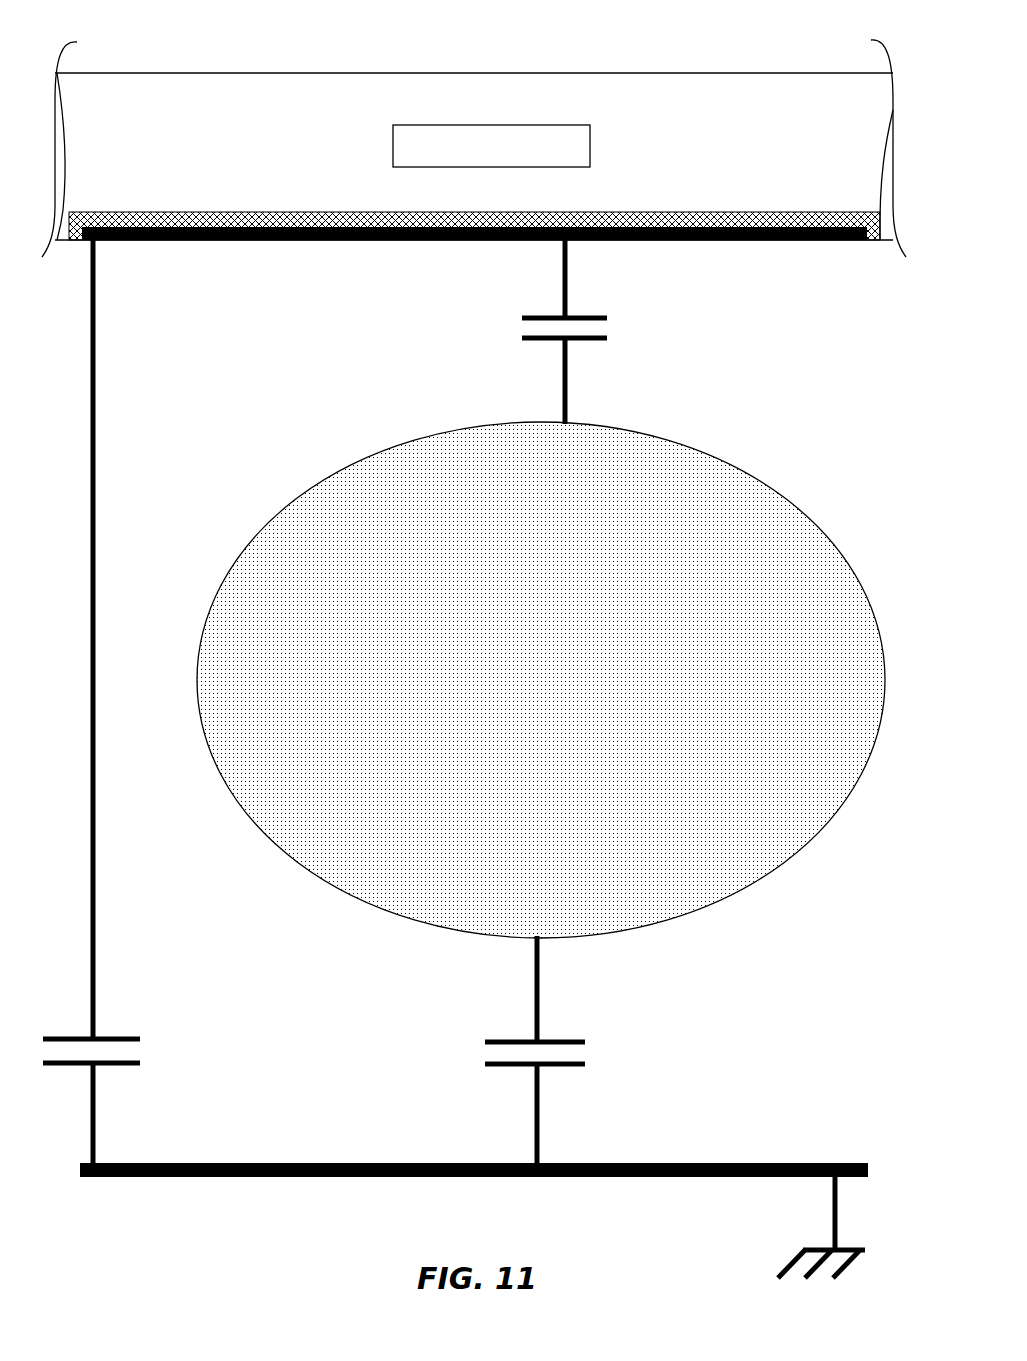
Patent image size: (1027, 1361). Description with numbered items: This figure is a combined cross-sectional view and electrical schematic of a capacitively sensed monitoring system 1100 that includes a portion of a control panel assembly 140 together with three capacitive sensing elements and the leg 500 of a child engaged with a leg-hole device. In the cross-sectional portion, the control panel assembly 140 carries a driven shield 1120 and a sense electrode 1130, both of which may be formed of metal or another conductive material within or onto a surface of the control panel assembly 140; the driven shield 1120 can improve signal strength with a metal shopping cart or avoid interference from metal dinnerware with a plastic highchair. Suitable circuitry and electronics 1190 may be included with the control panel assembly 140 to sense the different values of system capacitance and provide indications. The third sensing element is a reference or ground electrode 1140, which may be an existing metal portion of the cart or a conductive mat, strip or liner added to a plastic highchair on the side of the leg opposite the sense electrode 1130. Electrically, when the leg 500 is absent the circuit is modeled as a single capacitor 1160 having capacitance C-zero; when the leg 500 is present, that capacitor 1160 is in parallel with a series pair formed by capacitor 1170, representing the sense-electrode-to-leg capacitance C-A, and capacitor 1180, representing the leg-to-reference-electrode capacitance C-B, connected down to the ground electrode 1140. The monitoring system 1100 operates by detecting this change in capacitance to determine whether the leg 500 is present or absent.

The control panel assembly 140 is at (840, 72).
The capacitive sensing element (driven shield) 1120 is at (358, 210).
The capacitive sensing element (sense electrode) 1130 is at (225, 240).
The circuitry and electronics 1190 is at (491, 146).
The capacitor C_A 1170 is at (607, 338).
The leg 500 is at (541, 680).
The capacitor C_B 1180 is at (583, 1040).
The single capacitor C_0 1160 is at (138, 1039).
The capacitive sensing element (reference or ground electrode) 1140 is at (763, 1163).
The capacitively sensed monitoring system 1100 is at (788, 358).